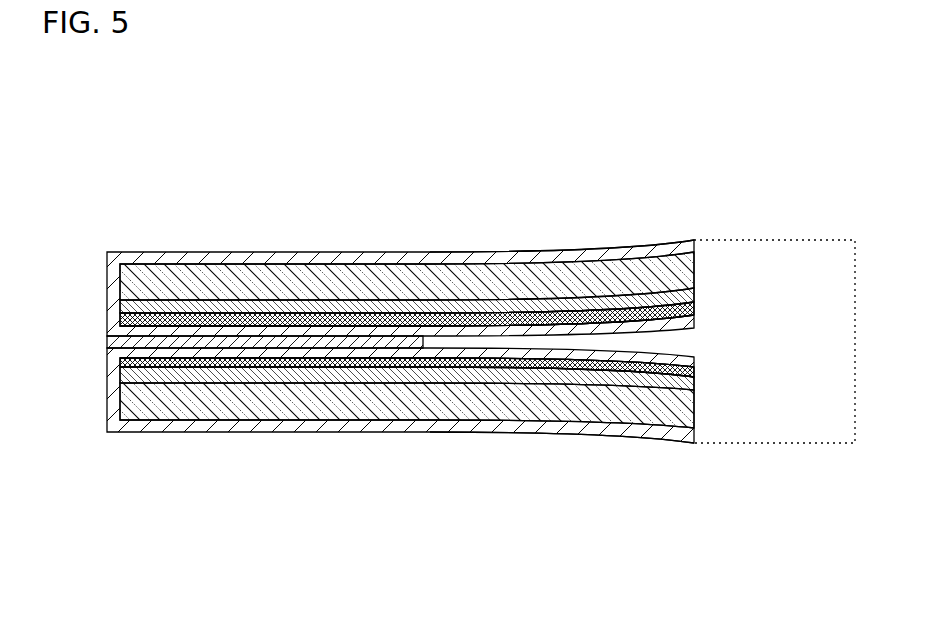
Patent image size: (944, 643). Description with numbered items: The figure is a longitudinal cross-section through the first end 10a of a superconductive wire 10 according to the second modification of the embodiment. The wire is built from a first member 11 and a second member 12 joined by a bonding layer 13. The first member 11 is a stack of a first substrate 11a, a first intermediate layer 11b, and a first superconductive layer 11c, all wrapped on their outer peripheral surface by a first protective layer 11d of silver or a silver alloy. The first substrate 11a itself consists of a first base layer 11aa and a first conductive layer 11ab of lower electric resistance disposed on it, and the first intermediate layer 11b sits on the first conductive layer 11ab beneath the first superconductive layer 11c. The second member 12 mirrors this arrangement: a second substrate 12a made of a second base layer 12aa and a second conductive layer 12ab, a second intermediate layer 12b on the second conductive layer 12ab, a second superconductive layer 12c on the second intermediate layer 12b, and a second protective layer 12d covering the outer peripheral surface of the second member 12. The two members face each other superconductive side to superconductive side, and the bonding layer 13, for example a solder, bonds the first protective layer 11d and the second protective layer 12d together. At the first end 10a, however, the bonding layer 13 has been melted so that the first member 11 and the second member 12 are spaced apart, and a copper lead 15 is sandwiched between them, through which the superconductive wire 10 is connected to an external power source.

The superconductive wire 10 is at (558, 165).
The first end 10a is at (425, 233).
The first member 11 is at (333, 510).
The first substrate 11a is at (373, 474).
The first base layer 11aa is at (321, 372).
The first conductive layer 11ab is at (344, 364).
The first intermediate layer 11b is at (268, 378).
The first superconductive layer 11c is at (198, 400).
The first protective layer 11d is at (123, 428).
The second member 12 is at (135, 178).
The second substrate 12a is at (100, 213).
The second base layer 12aa is at (148, 269).
The second conductive layer 12ab is at (145, 314).
The second intermediate layer 12b is at (206, 314).
The second superconductive layer 12c is at (276, 292).
The second protective layer 12d is at (325, 330).
The bonding layer 13 is at (424, 346).
The lead 15 is at (763, 425).